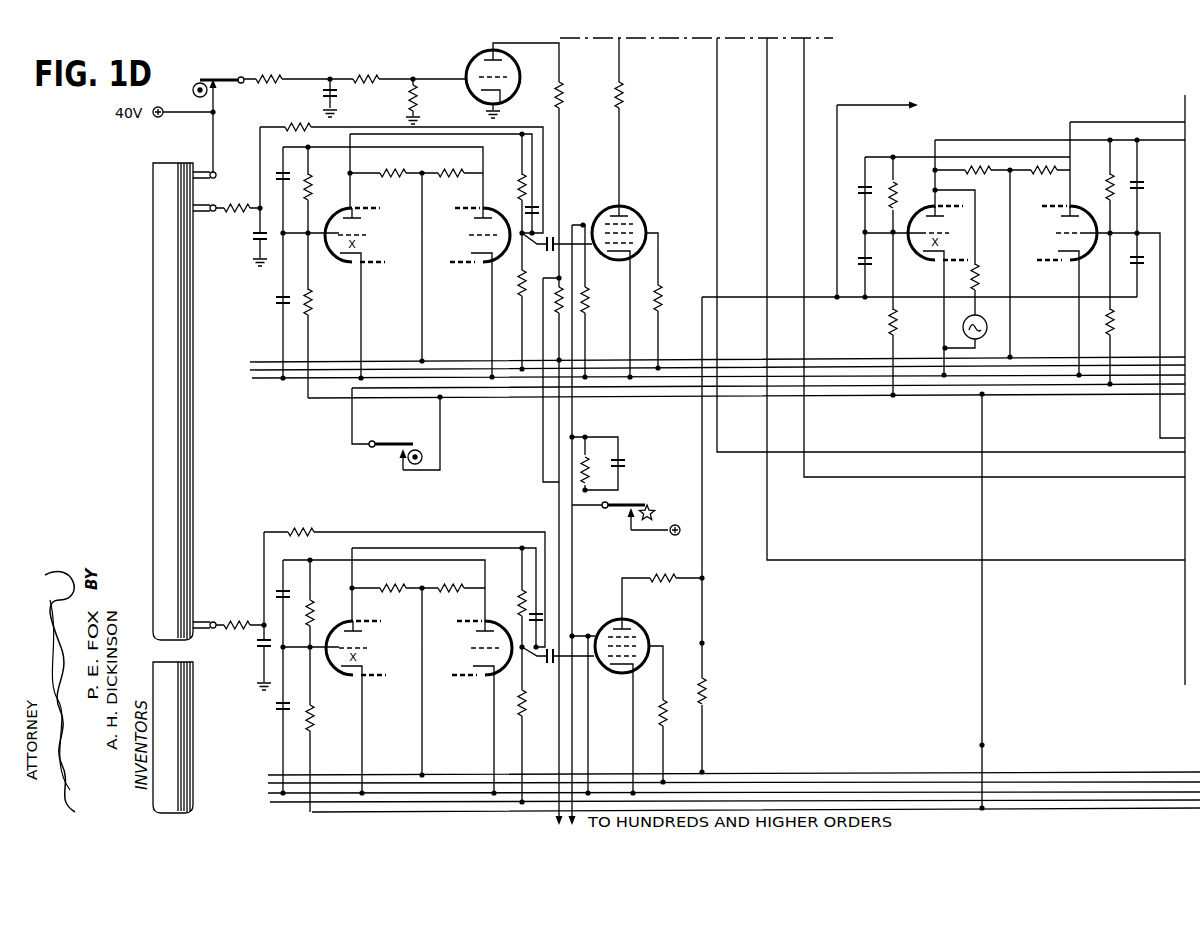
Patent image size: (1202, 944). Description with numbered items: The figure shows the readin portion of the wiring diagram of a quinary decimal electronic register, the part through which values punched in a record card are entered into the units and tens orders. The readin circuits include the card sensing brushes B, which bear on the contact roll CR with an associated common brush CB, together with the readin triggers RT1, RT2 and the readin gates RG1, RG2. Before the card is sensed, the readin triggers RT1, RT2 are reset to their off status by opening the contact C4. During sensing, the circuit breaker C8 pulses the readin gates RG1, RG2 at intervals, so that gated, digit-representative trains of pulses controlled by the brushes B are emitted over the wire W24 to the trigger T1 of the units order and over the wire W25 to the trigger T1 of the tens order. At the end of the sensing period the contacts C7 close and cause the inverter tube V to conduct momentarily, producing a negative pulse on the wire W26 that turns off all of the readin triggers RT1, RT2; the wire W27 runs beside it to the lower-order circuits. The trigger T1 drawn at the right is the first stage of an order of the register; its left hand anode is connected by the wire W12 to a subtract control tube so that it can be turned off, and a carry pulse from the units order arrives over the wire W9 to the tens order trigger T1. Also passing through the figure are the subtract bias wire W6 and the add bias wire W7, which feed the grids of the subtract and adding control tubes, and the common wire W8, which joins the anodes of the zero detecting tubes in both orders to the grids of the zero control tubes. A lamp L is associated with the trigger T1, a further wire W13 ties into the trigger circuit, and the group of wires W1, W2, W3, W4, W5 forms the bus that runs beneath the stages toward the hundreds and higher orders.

The contacts C7 is at (216, 78).
The common brush CB is at (198, 168).
The contact roll CR is at (152, 198).
The card sensing brushes B is at (201, 213).
The inverter tube V is at (467, 70).
The wire W24 is at (621, 68).
The subtract bias wire W6 is at (718, 72).
The add bias wire W7 is at (805, 70).
The common wire W8 is at (767, 100).
The wire W9 is at (840, 148).
The wire W12 is at (1022, 144).
The wire W13 is at (1126, 122).
The wire W26 is at (560, 145).
The wire W27 is at (574, 223).
The readin trigger RT1 is at (398, 260).
The readin gate RG1 is at (640, 222).
The wire W25 is at (815, 300).
The indicator lamp L is at (985, 325).
The trigger T1 is at (1021, 280).
The bus wire W1 is at (341, 361).
The bus wire W2 is at (399, 369).
The bus wire W3 is at (466, 377).
The bus wire W4 is at (612, 387).
The bus wire W5 is at (752, 396).
The contact C4 is at (418, 445).
The circuit breaker C8 is at (628, 506).
The readin trigger RT2 is at (425, 670).
The readin gate RG2 is at (642, 645).